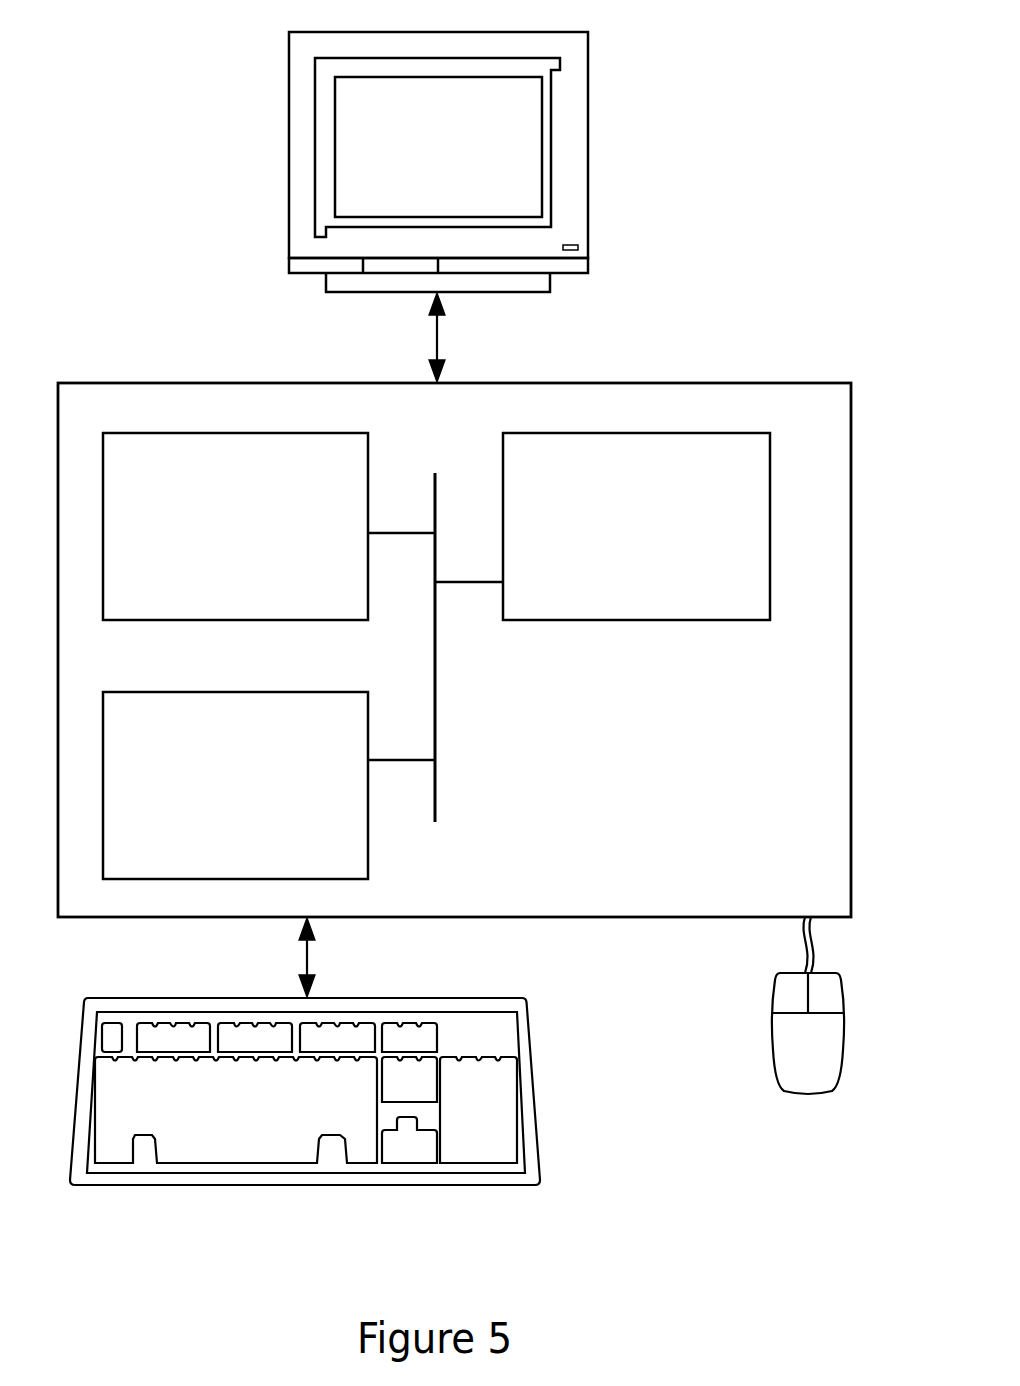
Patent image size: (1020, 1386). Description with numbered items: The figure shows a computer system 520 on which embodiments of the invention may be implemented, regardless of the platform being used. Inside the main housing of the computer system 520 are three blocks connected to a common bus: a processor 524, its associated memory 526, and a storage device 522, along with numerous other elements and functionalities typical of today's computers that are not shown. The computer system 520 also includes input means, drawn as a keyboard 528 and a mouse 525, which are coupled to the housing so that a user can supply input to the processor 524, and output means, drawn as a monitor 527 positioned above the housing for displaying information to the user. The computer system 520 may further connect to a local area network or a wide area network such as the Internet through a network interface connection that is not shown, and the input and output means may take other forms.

The computer system 520 is at (818, 185).
The storage device 522 is at (615, 539).
The processor 524 is at (212, 539).
The mouse 525 is at (784, 1061).
The memory 526 is at (209, 799).
The monitor 527 is at (412, 167).
The keyboard 528 is at (252, 1136).